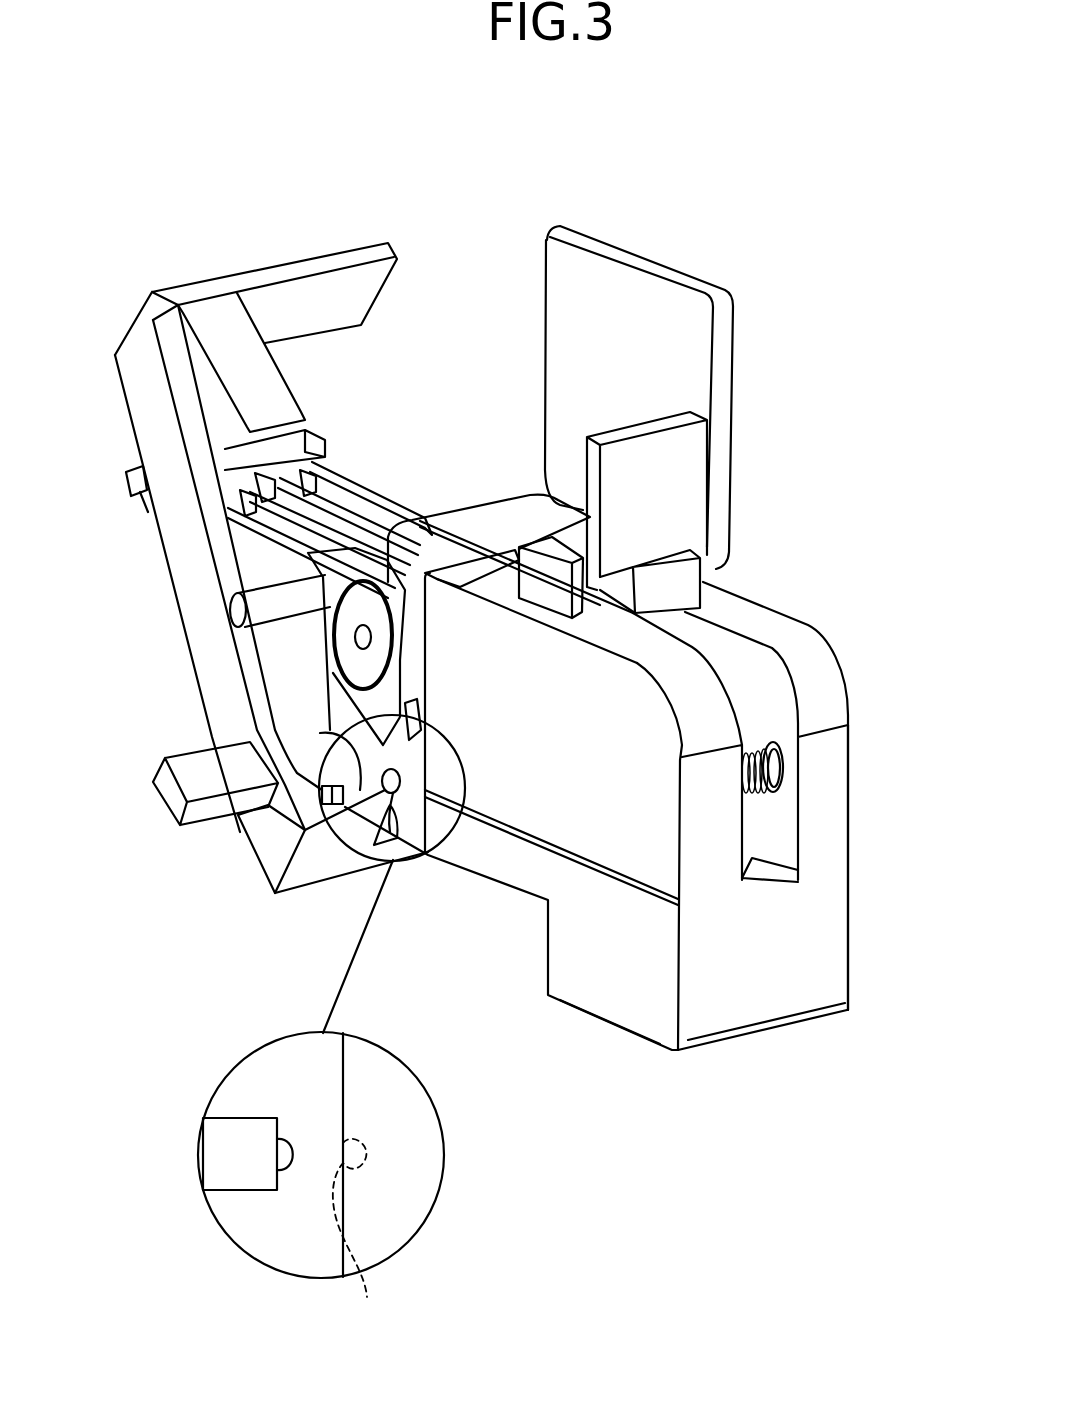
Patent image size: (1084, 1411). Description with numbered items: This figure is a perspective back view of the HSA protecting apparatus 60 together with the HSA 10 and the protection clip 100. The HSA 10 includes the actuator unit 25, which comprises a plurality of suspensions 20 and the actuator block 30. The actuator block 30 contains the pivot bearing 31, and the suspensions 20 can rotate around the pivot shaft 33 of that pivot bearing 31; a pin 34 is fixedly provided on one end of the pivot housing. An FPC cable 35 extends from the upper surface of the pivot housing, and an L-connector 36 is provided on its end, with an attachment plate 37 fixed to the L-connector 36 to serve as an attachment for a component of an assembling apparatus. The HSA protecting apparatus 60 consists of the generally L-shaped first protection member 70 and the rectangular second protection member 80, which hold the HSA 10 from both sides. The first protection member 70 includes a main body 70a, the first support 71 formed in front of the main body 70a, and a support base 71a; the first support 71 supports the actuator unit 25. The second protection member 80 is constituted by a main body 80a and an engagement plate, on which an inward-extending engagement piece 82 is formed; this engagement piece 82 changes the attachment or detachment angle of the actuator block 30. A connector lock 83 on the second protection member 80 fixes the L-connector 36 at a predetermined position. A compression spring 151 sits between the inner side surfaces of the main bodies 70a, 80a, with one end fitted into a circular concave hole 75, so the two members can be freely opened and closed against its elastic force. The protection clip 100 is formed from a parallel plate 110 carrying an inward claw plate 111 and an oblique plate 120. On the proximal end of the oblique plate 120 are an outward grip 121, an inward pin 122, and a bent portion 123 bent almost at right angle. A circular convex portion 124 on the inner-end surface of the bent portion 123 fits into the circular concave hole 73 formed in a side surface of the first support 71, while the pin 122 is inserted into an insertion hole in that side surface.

The HSA 10 is at (166, 245).
The suspensions 20 is at (322, 468).
The actuator unit 25 is at (393, 484).
The actuator block 30 is at (319, 668).
The pivot bearing 31 is at (375, 635).
The pivot shaft 33 is at (413, 698).
The pin 34 is at (230, 610).
The FPC cable 35 is at (485, 512).
The L-connector 36 is at (693, 488).
The attachment plate 37 is at (682, 298).
The HSA protecting apparatus 60 is at (787, 166).
The first protection member 70 is at (851, 662).
The main body 70a is at (830, 755).
The first support 71 is at (374, 1058).
The support base 71a is at (601, 1007).
The circular concave hole 73 is at (410, 832).
The circular concave hole 75 is at (783, 760).
The second protection member 80 is at (674, 880).
The main body 80a is at (523, 818).
The engagement piece 82 is at (460, 572).
The connector lock 83 is at (540, 596).
The protection clip 100 is at (359, 234).
The parallel plate 110 is at (292, 295).
The claw plate 111 is at (265, 365).
The oblique plate 120 is at (185, 560).
The grip 121 is at (162, 796).
The pin 122 is at (303, 777).
The bent portion 123 is at (325, 860).
The circular convex portion 124 is at (283, 1163).
The compression spring 151 is at (775, 773).